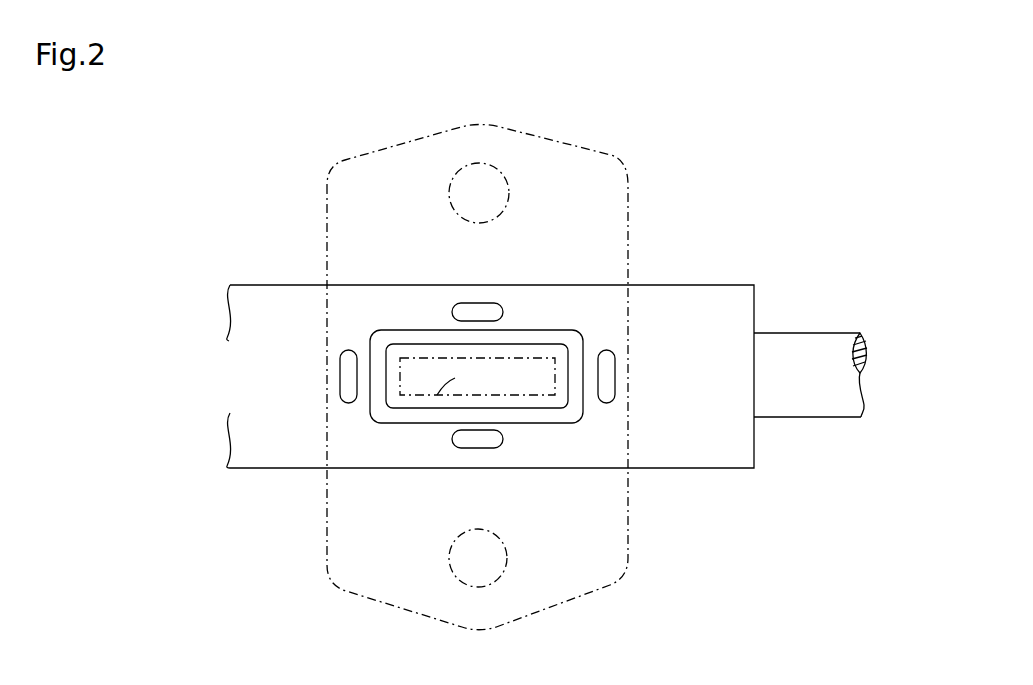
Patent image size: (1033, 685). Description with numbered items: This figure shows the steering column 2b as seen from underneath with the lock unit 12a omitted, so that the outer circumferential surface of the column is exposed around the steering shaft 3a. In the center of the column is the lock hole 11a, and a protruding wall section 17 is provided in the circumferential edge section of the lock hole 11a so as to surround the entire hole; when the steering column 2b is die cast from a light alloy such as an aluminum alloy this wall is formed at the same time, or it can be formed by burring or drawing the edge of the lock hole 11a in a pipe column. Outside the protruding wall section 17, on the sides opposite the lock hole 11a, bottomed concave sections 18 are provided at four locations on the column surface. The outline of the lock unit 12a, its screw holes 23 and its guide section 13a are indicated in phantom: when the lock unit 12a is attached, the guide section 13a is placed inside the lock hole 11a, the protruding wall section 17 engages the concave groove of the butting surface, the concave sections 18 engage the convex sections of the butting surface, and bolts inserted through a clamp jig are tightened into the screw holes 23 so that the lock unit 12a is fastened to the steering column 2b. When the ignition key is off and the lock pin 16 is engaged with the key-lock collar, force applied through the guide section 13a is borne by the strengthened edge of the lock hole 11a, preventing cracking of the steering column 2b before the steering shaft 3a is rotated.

The steering column 2b is at (742, 455).
The steering shaft 3a is at (803, 340).
The lock hole 11a is at (533, 348).
The lock unit 12a is at (587, 174).
The guide section 13a is at (407, 398).
The lock pin 16 is at (440, 392).
The protruding wall section 17 is at (392, 416).
The concave sections 18 is at (457, 312).
The screw hole 23 is at (470, 166).